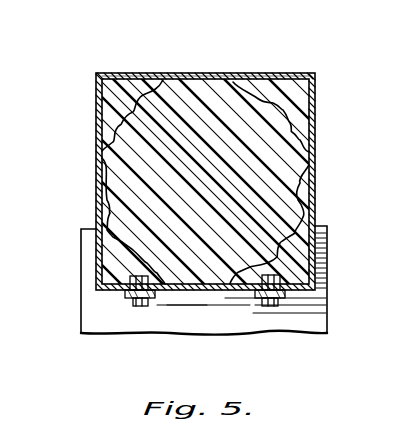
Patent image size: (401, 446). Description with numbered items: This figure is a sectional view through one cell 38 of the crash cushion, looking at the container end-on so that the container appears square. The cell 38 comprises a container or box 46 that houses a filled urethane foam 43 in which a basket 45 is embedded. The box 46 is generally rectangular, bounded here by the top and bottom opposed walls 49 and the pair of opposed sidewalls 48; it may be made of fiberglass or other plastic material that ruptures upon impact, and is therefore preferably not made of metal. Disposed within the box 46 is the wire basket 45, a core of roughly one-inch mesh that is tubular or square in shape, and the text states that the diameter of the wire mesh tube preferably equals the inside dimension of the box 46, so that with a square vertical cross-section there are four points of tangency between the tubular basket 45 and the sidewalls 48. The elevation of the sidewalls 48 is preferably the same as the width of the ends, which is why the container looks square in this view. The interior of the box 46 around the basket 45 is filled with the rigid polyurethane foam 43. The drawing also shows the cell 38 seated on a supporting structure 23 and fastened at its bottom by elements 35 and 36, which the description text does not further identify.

The base 23 is at (84, 283).
The washer plate 35 is at (126, 298).
The nut 36 is at (141, 307).
The cell 38 is at (103, 73).
The urethane foam 43 is at (312, 90).
The basket 45 is at (290, 126).
The container or box 46 is at (218, 74).
The sidewalls 48 is at (99, 127).
The top and bottom walls 49 is at (180, 73).